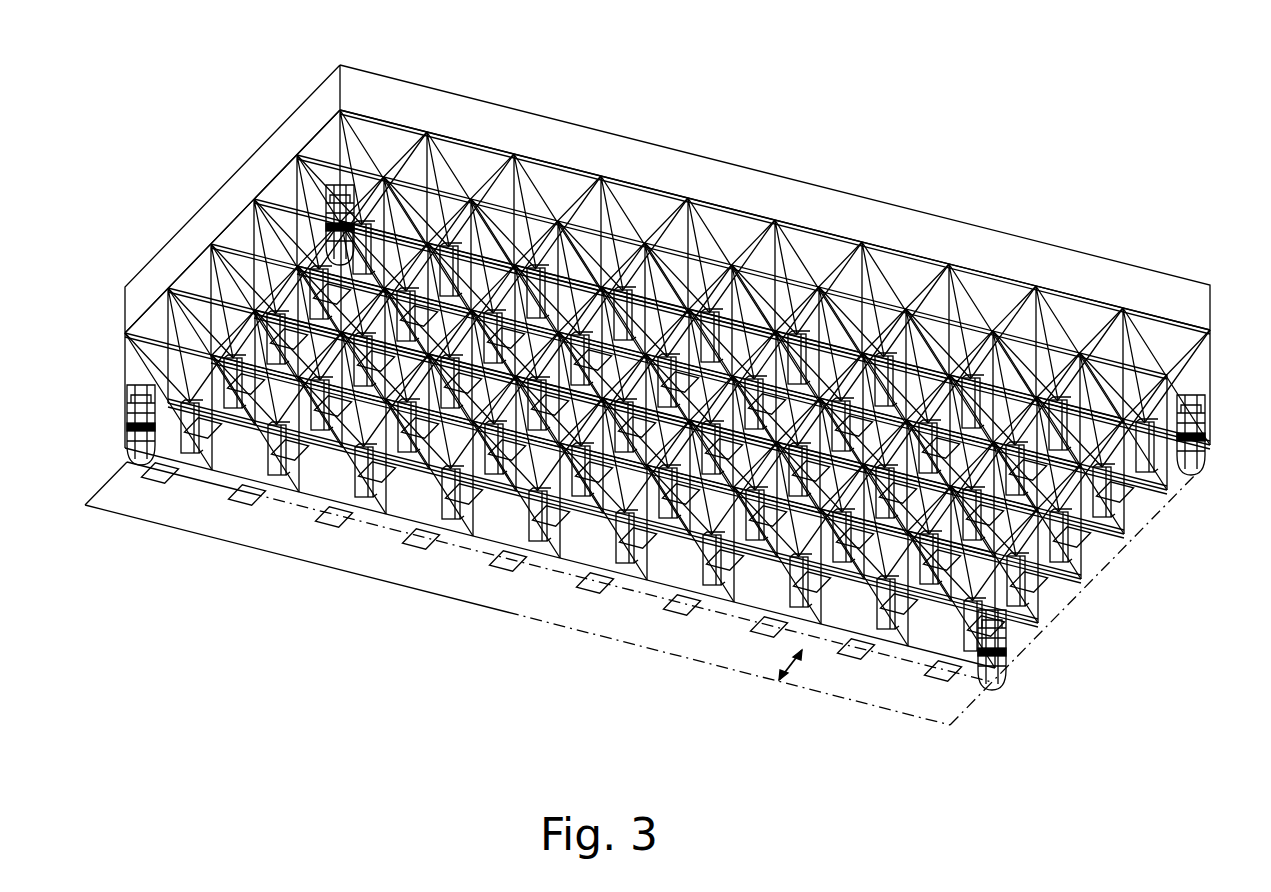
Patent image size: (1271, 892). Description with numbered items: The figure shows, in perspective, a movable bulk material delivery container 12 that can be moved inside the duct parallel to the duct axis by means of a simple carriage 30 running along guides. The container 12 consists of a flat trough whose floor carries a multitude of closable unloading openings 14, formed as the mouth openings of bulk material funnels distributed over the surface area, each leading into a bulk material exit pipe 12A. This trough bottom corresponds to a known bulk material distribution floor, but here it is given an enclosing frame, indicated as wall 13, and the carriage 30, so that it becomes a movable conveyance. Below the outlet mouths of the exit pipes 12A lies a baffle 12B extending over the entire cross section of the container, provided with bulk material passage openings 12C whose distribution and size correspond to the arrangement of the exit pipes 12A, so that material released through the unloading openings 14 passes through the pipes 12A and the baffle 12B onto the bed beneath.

The bulk material delivery container 12 is at (808, 192).
The wall 13 is at (1070, 273).
The bulk material exit pipes 12A is at (669, 475).
The baffle 12B is at (950, 708).
The bulk material passage openings 12C is at (594, 590).
The closable unloading openings 14 is at (538, 545).
The carriage 30 is at (126, 445).